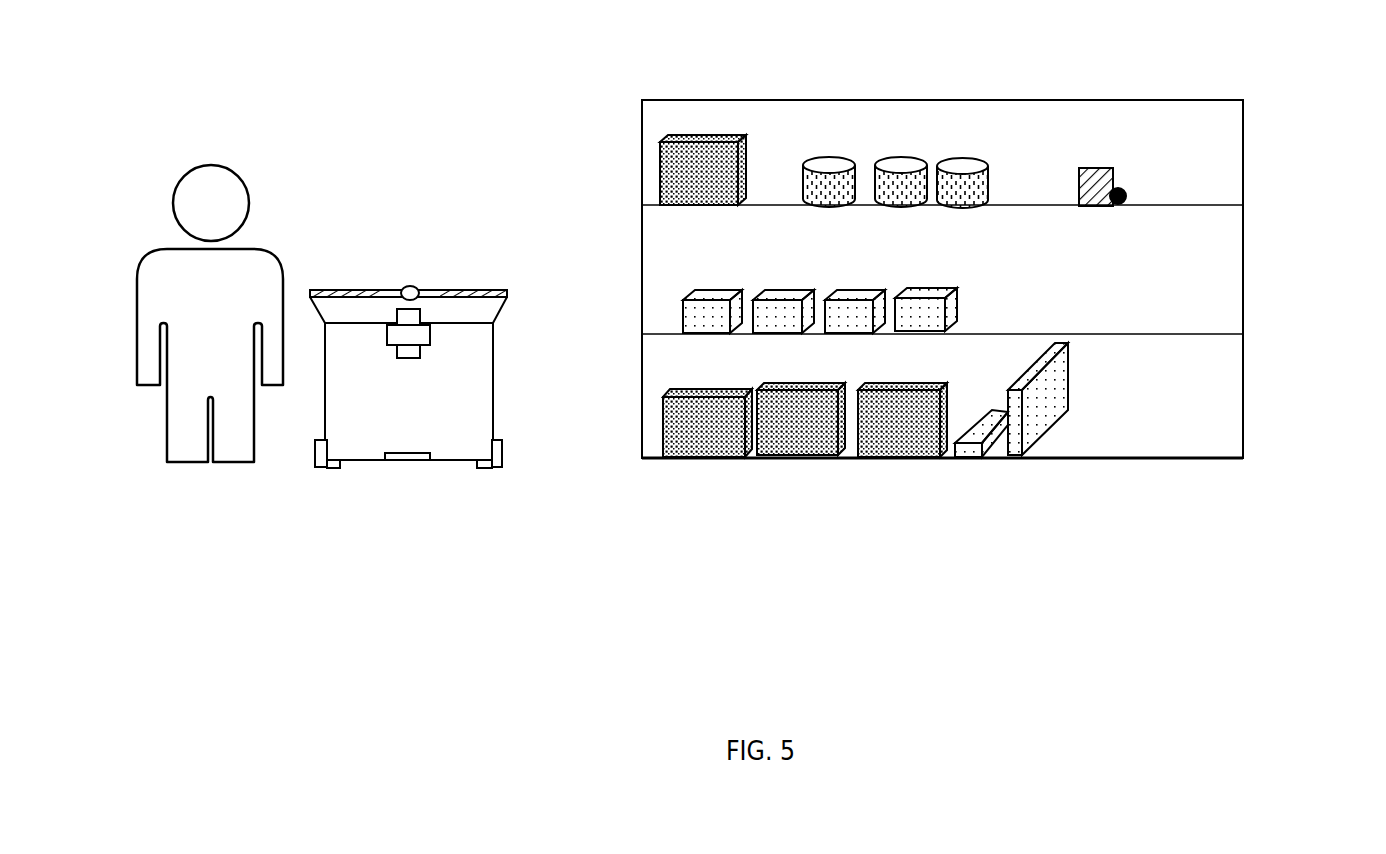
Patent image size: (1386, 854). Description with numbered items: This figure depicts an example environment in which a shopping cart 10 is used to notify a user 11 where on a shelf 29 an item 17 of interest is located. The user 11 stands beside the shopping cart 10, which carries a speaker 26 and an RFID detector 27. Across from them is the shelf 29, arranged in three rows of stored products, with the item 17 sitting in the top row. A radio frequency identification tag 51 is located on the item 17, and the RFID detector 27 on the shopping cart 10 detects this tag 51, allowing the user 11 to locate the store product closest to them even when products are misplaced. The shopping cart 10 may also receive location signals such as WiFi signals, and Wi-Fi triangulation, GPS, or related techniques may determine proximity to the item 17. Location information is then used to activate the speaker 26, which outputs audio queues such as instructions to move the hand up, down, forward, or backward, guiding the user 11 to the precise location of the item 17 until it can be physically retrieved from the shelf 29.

The shopping cart 10 is at (450, 343).
The user 11 is at (258, 222).
The item 17 is at (1112, 180).
The speaker 26 is at (402, 288).
The RFID detector 27 is at (403, 355).
The shelf 29 is at (987, 245).
The RFID tag 51 is at (1122, 203).